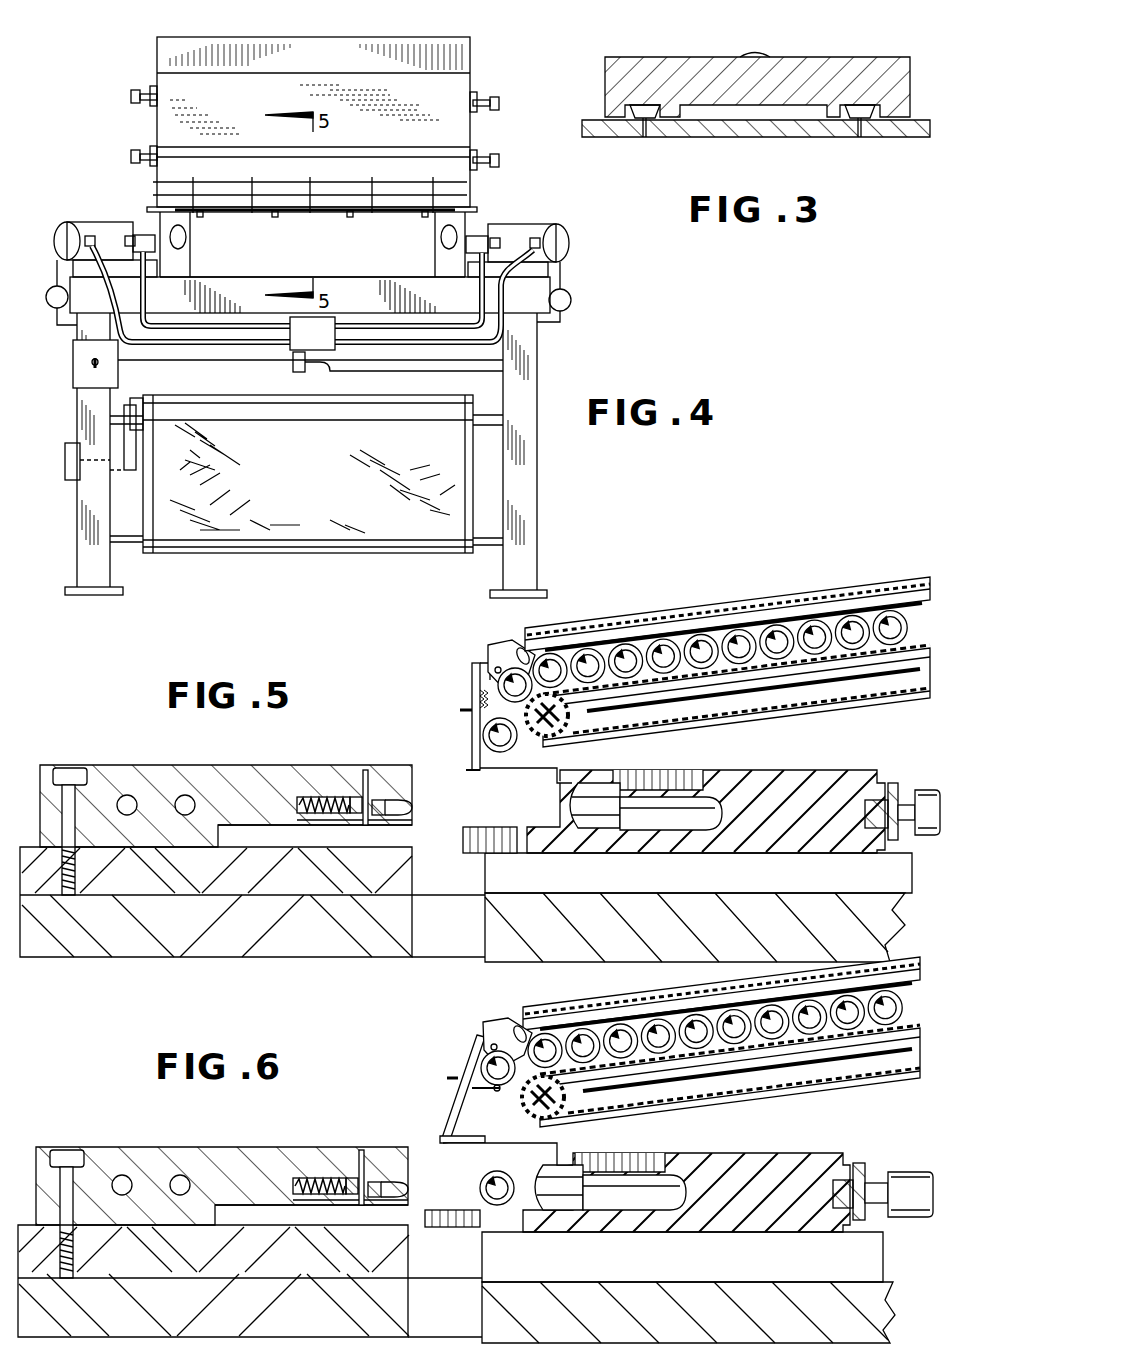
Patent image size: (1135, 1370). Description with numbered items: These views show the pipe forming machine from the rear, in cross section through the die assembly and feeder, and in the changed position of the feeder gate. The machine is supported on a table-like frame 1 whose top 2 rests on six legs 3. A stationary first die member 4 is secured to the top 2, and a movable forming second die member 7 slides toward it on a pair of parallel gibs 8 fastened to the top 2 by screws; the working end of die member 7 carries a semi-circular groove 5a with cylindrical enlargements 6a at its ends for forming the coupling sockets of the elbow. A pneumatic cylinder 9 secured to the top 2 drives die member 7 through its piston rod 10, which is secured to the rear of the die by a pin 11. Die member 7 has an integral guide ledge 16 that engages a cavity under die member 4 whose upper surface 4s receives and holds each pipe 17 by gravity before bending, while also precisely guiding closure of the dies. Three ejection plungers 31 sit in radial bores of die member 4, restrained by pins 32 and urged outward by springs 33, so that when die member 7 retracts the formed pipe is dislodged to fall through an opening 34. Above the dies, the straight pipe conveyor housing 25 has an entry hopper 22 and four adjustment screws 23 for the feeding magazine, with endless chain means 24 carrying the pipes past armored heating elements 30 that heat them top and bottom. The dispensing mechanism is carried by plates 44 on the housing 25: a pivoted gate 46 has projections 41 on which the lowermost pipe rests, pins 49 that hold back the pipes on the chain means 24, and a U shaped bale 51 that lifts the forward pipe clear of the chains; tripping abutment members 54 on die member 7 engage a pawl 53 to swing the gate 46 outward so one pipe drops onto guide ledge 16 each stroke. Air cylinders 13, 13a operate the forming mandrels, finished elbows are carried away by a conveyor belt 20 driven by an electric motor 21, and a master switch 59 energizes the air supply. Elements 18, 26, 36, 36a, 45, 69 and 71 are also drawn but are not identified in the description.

In FIG. 4, the table-like frame 1 is at (550, 337).
In FIG. 4, the top 2 is at (381, 310).
In FIG. 3, the top 2 is at (832, 137).
In FIG. 5, the top 2 is at (210, 934).
In FIG. 6, the top 2 is at (210, 1316).
In FIG. 4, the legs 3 is at (77, 535).
In FIG. 4, the stationary first die member 4 is at (350, 265).
In FIG. 5, the stationary first die member 4 is at (142, 765).
In FIG. 6, the stationary first die member 4 is at (162, 1147).
In FIG. 5, the upper surface 4s is at (315, 838).
In FIG. 6, the upper surface 4s is at (311, 1215).
In FIG. 5, the semi-circular groove 5a is at (662, 820).
In FIG. 6, the semi-circular groove 5a is at (652, 1200).
In FIG. 5, the cylindrical enlargements 6a is at (595, 820).
In FIG. 6, the cylindrical enlargements 6a is at (565, 1200).
In FIG. 3, the movable forming second die member 7 is at (668, 58).
In FIG. 5, the movable forming second die member 7 is at (790, 782).
In FIG. 6, the movable forming second die member 7 is at (740, 1153).
In FIG. 3, the gibs or rails 8 is at (628, 110).
In FIG. 3, the pneumatic cylinder 9 is at (757, 52).
In FIG. 5, the piston rod 10 is at (925, 790).
In FIG. 6, the piston rod 10 is at (903, 1218).
In FIG. 5, the pin 11 is at (898, 850).
In FIG. 6, the pin 11 is at (868, 1173).
In FIG. 4, the air cylinder 13 is at (548, 226).
In FIG. 4, the air cylinder 13a is at (75, 222).
In FIG. 5, the guide ledge 16 is at (485, 828).
In FIG. 6, the guide ledge 16 is at (428, 1216).
In FIG. 4, the pipe 17 is at (290, 214).
In FIG. 5, the pipe 17 is at (560, 652).
In FIG. 6, the pipe 17 is at (588, 1034).
In FIG. 4, the hopper assembly 18 is at (459, 93).
In FIG. 4, the conveyor belt 20 is at (325, 485).
In FIG. 4, the electric motor 21 is at (66, 472).
In FIG. 4, the entry hopper 22 is at (322, 47).
In FIG. 4, the adjustment screws 23 is at (131, 97).
In FIG. 5, the endless chain means 24 is at (688, 714).
In FIG. 6, the endless chain means 24 is at (673, 1095).
In FIG. 4, the straight pipe conveyor housing 25 is at (237, 119).
In FIG. 5, the straight pipe conveyor housing 25 is at (677, 612).
In FIG. 6, the straight pipe conveyor housing 25 is at (876, 968).
In FIG. 5, the sprocket 26 is at (554, 740).
In FIG. 6, the sprocket 26 is at (563, 1120).
In FIG. 5, the armored heating elements 30 is at (730, 616).
In FIG. 6, the armored heating elements 30 is at (632, 1012).
In FIG. 5, the ejection plungers 31 is at (412, 806).
In FIG. 6, the ejection plungers 31 is at (408, 1188).
In FIG. 5, the pins 32 is at (363, 770).
In FIG. 6, the pins 32 is at (360, 1150).
In FIG. 5, the spring 33 is at (322, 814).
In FIG. 6, the spring 33 is at (320, 1196).
In FIG. 5, the opening 34 is at (433, 848).
In FIG. 6, the opening 34 is at (440, 1263).
In FIG. 4, the valve 36 is at (572, 300).
In FIG. 4, the valve 36a is at (53, 306).
In FIG. 4, the projections 41 is at (200, 215).
In FIG. 5, the projections 41 is at (500, 753).
In FIG. 6, the projections 41 is at (458, 1110).
In FIG. 5, the plates 44 is at (510, 648).
In FIG. 6, the plates 44 is at (510, 1028).
In FIG. 4, the plate 45 is at (150, 210).
In FIG. 5, the plate 45 is at (470, 771).
In FIG. 6, the plate 45 is at (443, 1135).
In FIG. 5, the gate 46 is at (472, 672).
In FIG. 6, the gate 46 is at (463, 1070).
In FIG. 5, the pin 49 is at (520, 648).
In FIG. 6, the pin 49 is at (518, 1027).
In FIG. 6, the U shaped bale 51 is at (498, 1093).
In FIG. 5, the pawl 53 is at (457, 727).
In FIG. 5, the tripping abutment members 54 is at (538, 770).
In FIG. 6, the tripping abutment members 54 is at (455, 1148).
In FIG. 4, the master switch 59 is at (88, 362).
In FIG. 4, the air hose 69 is at (110, 288).
In FIG. 4, the air hose 71 is at (145, 297).